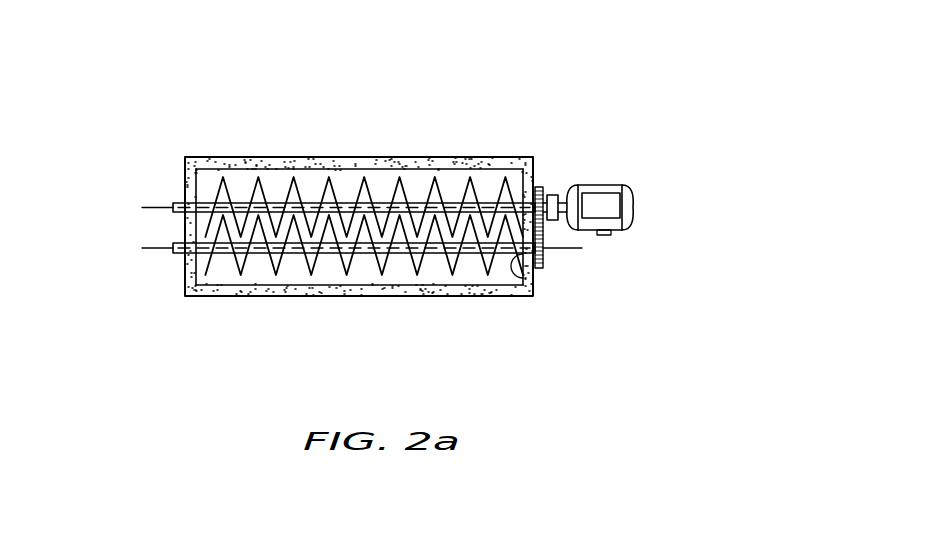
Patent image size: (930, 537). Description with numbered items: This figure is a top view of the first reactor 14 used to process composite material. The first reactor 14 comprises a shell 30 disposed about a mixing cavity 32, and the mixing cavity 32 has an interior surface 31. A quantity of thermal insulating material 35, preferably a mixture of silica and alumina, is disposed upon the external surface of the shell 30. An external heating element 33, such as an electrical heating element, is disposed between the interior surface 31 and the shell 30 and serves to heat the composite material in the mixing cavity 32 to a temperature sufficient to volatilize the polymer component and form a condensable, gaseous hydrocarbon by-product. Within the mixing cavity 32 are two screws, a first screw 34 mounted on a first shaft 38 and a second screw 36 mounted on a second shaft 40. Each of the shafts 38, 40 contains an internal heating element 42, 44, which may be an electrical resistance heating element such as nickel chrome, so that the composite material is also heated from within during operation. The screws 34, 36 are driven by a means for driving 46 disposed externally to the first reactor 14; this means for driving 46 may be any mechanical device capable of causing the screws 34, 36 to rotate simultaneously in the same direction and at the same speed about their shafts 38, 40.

The first reactor 14 is at (537, 101).
The shell 30 is at (536, 165).
The interior surface 31 is at (213, 171).
The mixing cavity 32 is at (206, 273).
The external heating element 33 is at (478, 291).
The first screw 34 is at (318, 193).
The thermal insulating material 35 is at (404, 157).
The second screw 36 is at (302, 264).
The first shaft 38 is at (485, 206).
The second shaft 40 is at (527, 272).
The internal heating element 42 is at (135, 207).
The internal heating element 44 is at (135, 250).
The means for driving 46 is at (636, 207).